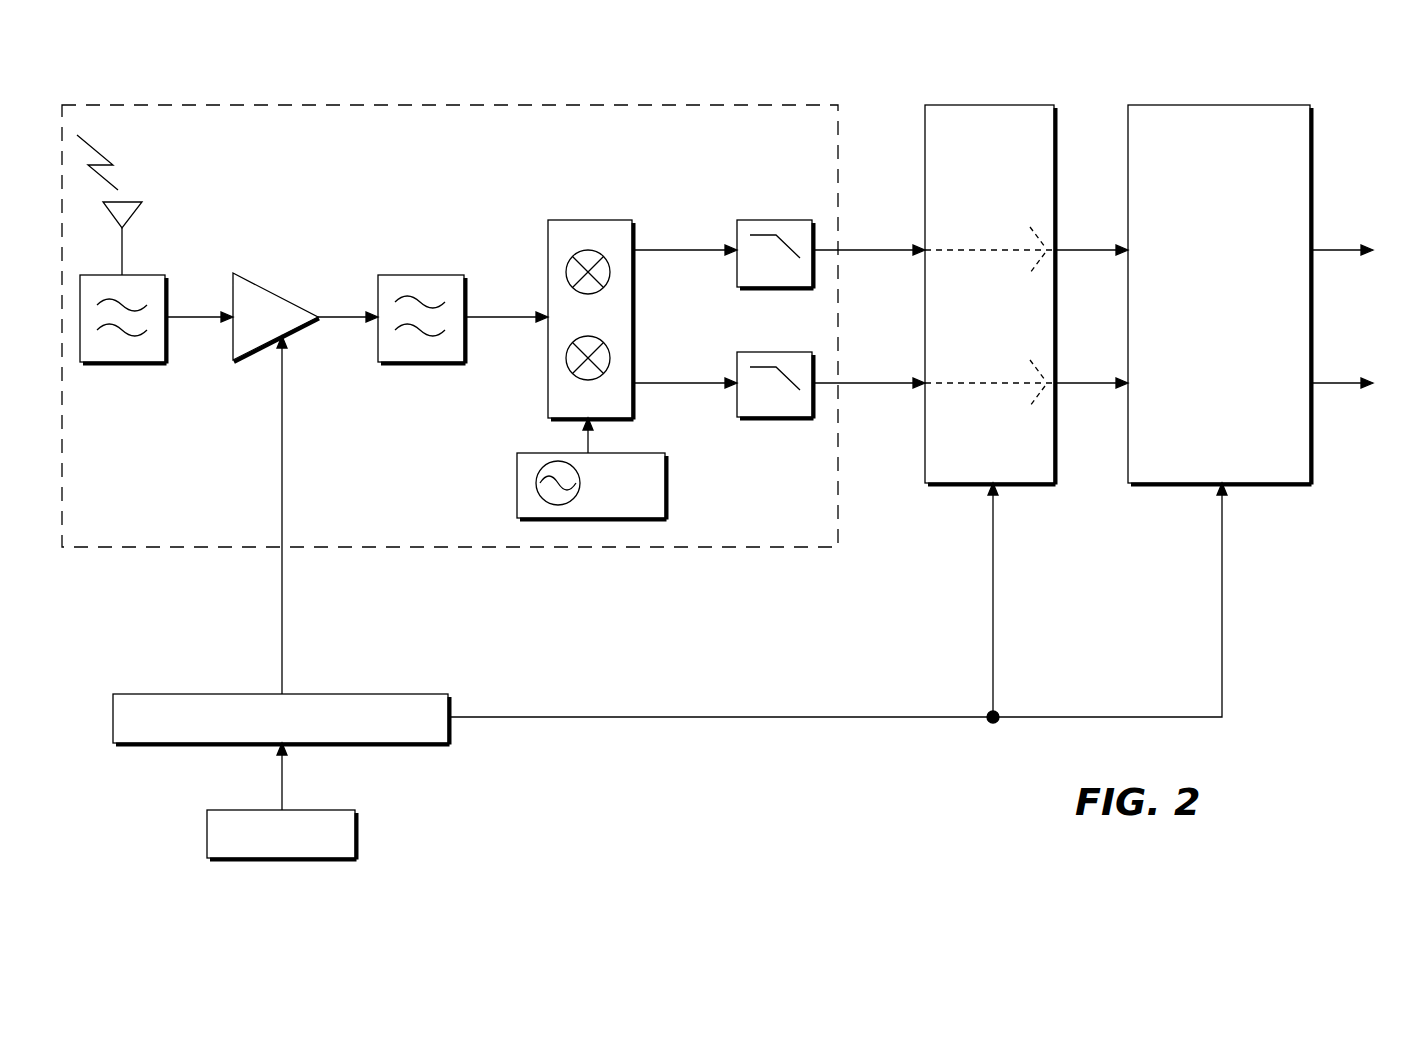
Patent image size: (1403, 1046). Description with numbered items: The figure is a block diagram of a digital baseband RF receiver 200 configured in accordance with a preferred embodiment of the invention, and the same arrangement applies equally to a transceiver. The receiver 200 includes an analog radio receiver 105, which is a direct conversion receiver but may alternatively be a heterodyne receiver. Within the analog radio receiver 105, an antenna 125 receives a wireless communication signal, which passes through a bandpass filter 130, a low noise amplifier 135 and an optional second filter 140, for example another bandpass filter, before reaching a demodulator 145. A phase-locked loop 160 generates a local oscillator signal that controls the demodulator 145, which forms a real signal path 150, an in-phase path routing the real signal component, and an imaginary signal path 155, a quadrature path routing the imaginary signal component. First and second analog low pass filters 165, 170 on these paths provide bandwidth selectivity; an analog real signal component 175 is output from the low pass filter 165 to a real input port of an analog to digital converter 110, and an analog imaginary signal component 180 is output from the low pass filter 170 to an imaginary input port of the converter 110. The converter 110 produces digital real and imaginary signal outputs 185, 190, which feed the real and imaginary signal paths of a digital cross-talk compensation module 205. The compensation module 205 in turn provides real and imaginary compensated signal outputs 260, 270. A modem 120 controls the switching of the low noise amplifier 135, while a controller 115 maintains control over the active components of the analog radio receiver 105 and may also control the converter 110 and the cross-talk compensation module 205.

The DBB RF receiver 200 is at (118, 57).
The analog radio receiver 105 is at (207, 105).
The analog to digital converter 110 is at (1030, 105).
The controller 115 is at (395, 694).
The modem 120 is at (355, 838).
The antenna 125 is at (125, 240).
The bandpass filter 130 is at (152, 275).
The low noise amplifier 135 is at (273, 292).
The second filter 140 is at (435, 275).
The demodulator 145 is at (585, 220).
The real signal path 150 is at (688, 250).
The imaginary signal path 155 is at (700, 383).
The phase-locked loop 160 is at (517, 492).
The first analog low pass filter 165 is at (793, 220).
The second analog low pass filter 170 is at (778, 418).
The analog real signal component 175 is at (868, 250).
The analog imaginary signal component 180 is at (868, 383).
The digital real signal output 185 is at (1088, 250).
The digital imaginary signal output 190 is at (1088, 383).
The digital cross-talk compensation module 205 is at (1195, 105).
The real compensated signal output 260 is at (1333, 250).
The imaginary compensated signal output 270 is at (1333, 383).